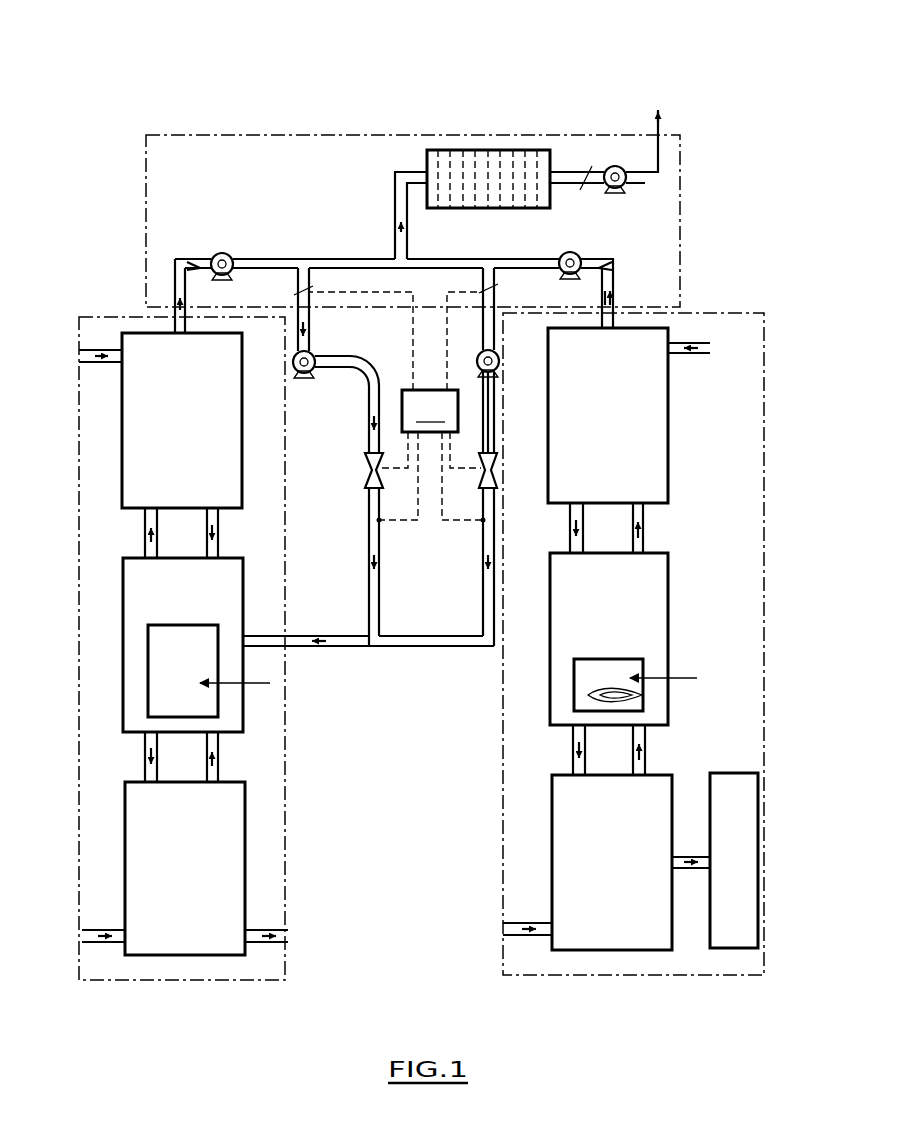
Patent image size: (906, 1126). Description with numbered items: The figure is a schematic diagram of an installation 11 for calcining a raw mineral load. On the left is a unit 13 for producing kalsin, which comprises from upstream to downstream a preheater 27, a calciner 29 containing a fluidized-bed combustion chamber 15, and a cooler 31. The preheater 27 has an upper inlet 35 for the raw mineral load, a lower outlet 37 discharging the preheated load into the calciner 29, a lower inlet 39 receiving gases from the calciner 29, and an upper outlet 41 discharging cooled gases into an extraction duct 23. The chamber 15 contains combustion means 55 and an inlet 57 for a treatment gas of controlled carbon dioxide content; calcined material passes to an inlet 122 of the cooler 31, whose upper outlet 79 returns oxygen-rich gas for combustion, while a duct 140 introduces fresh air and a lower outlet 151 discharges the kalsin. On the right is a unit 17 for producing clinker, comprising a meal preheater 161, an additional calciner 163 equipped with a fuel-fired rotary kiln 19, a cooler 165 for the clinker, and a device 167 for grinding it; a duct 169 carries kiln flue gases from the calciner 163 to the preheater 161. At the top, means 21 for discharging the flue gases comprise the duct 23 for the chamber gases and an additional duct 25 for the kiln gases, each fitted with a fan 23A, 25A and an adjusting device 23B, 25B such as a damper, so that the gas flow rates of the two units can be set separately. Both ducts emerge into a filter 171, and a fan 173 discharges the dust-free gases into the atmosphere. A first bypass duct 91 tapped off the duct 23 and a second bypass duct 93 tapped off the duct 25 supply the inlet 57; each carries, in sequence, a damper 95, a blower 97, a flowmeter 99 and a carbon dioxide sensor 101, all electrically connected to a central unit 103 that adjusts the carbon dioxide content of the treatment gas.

The installation 11 is at (549, 75).
The unit for producing kalsin 13 is at (77, 450).
The fluidized-bed combustion chamber 15 is at (183, 671).
The unit for producing clinker 17 is at (764, 445).
The fuel-fired rotary kiln 19 is at (635, 685).
The means for discharging the flue gases 21 is at (683, 212).
The extraction duct 23 is at (252, 257).
The fan 23A is at (221, 252).
The device for adjusting the fan 23B is at (189, 262).
The additional duct 25 is at (508, 258).
The fan 25A is at (578, 253).
The device for adjusting the fan 25B is at (613, 266).
The preheater 27 is at (182, 420).
The calciner 29 is at (183, 645).
The cooler 31 is at (185, 868).
The upper inlet 35 is at (95, 350).
The lower outlet 37 is at (220, 534).
The lower inlet 39 is at (143, 530).
The upper outlet 41 is at (174, 303).
The combustion means 55 is at (270, 684).
The inlet for introducing a treatment gas 57 is at (262, 635).
The upper outlet 79 is at (220, 761).
The first bypass duct 91 is at (380, 595).
The second bypass duct 93 is at (410, 648).
The damper 95 is at (298, 291).
The blower 97 is at (305, 378).
The flowmeter 99 is at (366, 478).
The sensor 101 is at (482, 522).
The central unit 103 is at (396, 406).
The inlet 122 is at (143, 758).
The duct for introducing fresh air 140 is at (100, 944).
The lower outlet 151 is at (283, 926).
The meal preheater 161 is at (629, 415).
The additional calciner 163 is at (609, 639).
The cooler 165 is at (606, 862).
The device for grinding 167 is at (722, 772).
The duct 169 is at (645, 528).
The filter 171 is at (481, 165).
The fan 173 is at (614, 165).